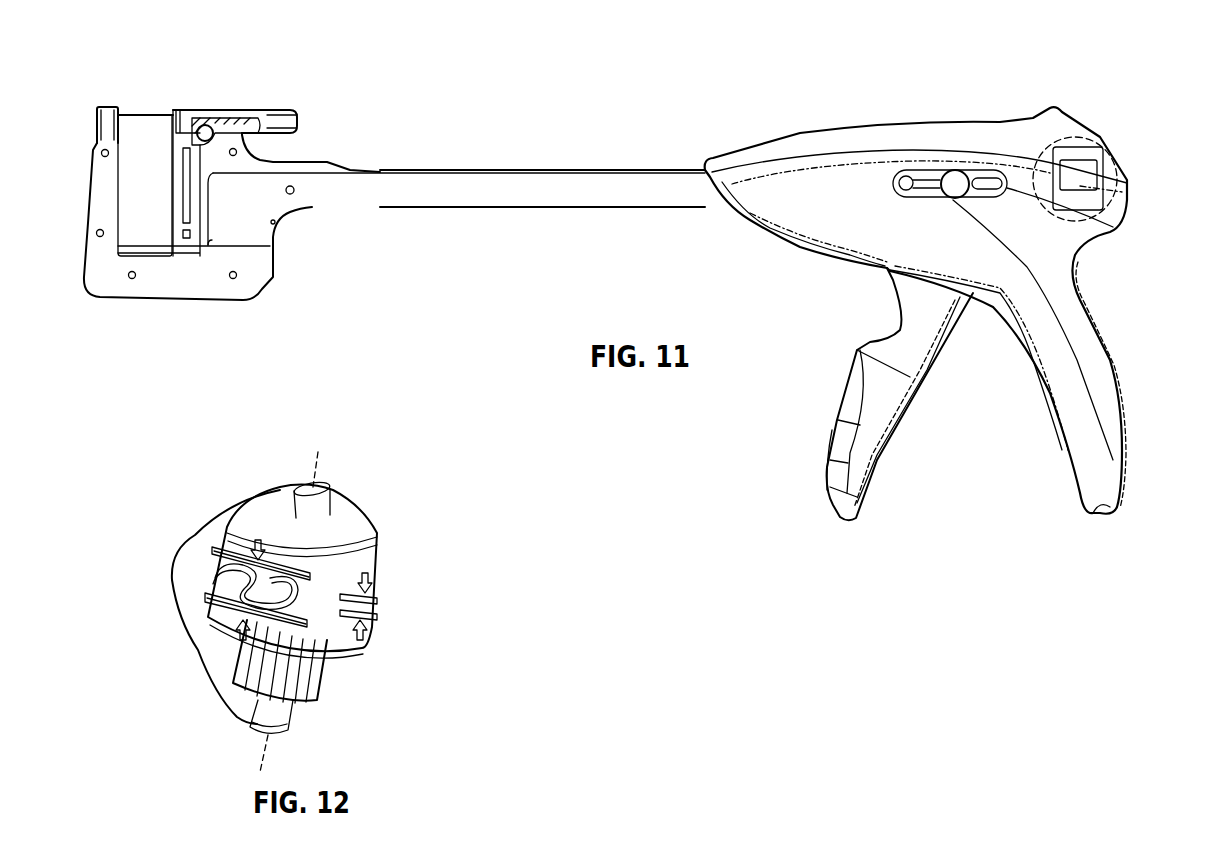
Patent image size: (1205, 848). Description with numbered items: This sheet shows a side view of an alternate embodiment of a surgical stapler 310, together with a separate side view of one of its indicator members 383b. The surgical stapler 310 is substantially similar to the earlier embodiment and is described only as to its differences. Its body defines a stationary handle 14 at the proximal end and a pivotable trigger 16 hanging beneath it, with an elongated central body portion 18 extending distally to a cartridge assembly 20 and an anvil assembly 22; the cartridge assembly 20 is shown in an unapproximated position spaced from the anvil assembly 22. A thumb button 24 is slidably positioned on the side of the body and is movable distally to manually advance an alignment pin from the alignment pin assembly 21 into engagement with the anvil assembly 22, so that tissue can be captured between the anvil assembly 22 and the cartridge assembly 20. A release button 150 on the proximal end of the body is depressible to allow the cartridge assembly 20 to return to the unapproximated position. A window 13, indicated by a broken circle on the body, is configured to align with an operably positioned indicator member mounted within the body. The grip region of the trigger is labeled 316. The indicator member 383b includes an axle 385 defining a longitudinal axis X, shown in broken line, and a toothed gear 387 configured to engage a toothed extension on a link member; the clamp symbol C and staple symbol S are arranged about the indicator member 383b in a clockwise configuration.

In FIG. 11, the surgical stapler 310 is at (762, 48).
In FIG. 11, the stationary handle 14 is at (1103, 378).
In FIG. 11, the pivotable trigger 16 is at (872, 430).
In FIG. 11, the movable handle grip portion 316 is at (835, 420).
In FIG. 11, the thumb button 24 is at (958, 176).
In FIG. 11, the release button 150 is at (1062, 128).
In FIG. 11, the window 13 is at (1115, 171).
In FIG. 11, the elongated central body portion 18 is at (463, 166).
In FIG. 11, the cartridge assembly 20 is at (236, 90).
In FIG. 11, the anvil assembly 22 is at (92, 163).
In FIG. 11, the alignment pin assembly 21 is at (314, 119).
In FIG. 12, the indicator member 383b is at (400, 518).
In FIG. 12, the axle 385 is at (175, 546).
In FIG. 12, the toothed gear 387 is at (317, 685).